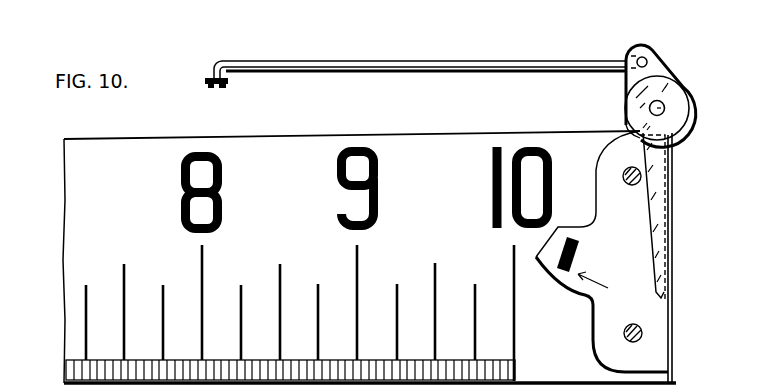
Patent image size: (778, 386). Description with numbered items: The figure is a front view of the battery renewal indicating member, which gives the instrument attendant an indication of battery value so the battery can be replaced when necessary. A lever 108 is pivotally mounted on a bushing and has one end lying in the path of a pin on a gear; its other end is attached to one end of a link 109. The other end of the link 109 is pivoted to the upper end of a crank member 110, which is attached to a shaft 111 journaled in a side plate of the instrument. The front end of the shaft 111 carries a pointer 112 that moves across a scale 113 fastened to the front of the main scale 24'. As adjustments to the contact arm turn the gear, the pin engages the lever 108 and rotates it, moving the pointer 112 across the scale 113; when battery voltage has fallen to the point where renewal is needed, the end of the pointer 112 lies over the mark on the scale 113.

The scale 24' is at (345, 257).
The lever 108 is at (211, 85).
The link 109 is at (371, 62).
The crank member 110 is at (664, 68).
The shaft 111 is at (676, 110).
The pointer 112 is at (687, 122).
The scale 113 is at (596, 304).